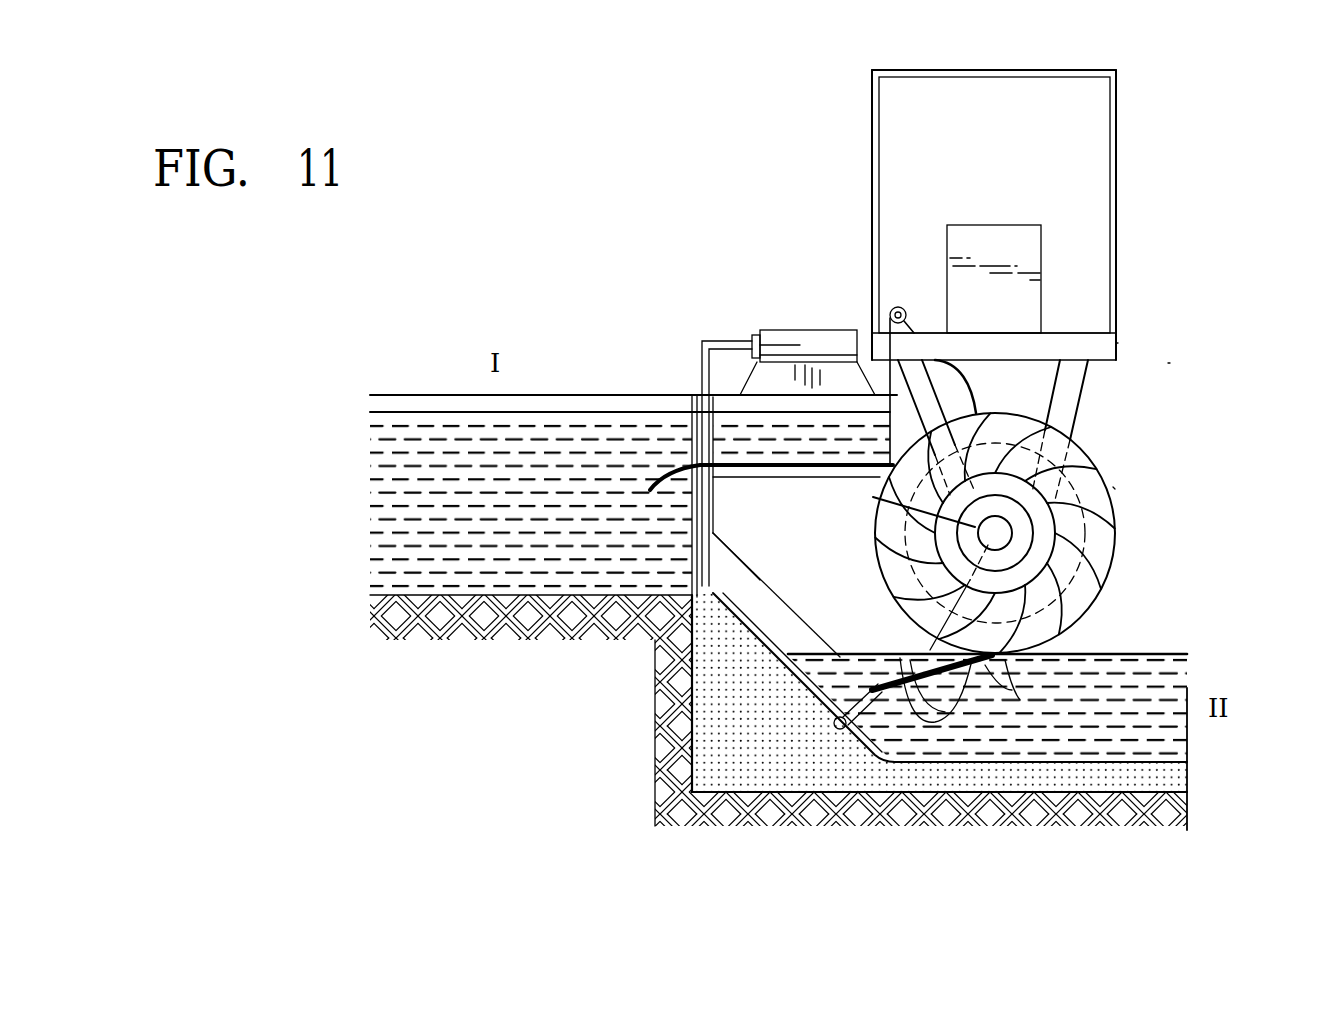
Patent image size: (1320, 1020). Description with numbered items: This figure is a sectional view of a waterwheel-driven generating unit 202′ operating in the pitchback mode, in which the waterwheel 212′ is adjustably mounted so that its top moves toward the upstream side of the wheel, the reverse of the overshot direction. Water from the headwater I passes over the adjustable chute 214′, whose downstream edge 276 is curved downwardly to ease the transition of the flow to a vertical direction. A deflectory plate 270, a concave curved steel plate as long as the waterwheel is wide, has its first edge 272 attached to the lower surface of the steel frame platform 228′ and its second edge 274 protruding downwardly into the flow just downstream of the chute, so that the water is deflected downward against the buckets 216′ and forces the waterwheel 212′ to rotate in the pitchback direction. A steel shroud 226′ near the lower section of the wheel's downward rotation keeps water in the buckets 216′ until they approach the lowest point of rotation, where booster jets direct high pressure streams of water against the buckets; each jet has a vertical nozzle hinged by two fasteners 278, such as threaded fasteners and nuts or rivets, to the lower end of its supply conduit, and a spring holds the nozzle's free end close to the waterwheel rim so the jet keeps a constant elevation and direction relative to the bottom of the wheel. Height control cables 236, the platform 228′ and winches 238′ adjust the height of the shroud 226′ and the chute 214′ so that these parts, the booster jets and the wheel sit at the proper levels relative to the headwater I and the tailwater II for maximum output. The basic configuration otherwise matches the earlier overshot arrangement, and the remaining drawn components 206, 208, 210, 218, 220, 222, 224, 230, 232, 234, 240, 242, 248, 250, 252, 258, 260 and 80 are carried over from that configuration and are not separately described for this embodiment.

The waterwheel-driven generating unit 202′ is at (1175, 361).
The ground fill 206 is at (715, 740).
The generator housing 208 is at (1138, 126).
The hydraulic cylinder 210 is at (768, 338).
The waterwheel 212′ is at (1095, 460).
The chute 214′ is at (700, 348).
The buckets 216′ is at (1108, 578).
The wheel rim 218 is at (1113, 487).
The axle 220 is at (1000, 532).
The outer rim 222 is at (1085, 425).
The gate wall 224 is at (717, 505).
The steel shroud 226′ is at (865, 513).
The steel frame platform 228′ is at (1117, 343).
The hub 230 is at (1115, 527).
The bearing support 232 is at (980, 542).
The generator 234 is at (990, 225).
The height control cables 236 is at (877, 387).
The winches 238′ is at (893, 306).
The housing side wall 240 is at (1117, 183).
The housing top 242 is at (1053, 70).
The chute inlet wall 248 is at (718, 600).
The chute channel 250 is at (760, 628).
The retaining wall 252 is at (693, 503).
The chute floor 258 is at (810, 690).
The foundation 260 is at (778, 742).
The deflectory plate 270 is at (968, 377).
The first edge of the deflectory plate 272 is at (870, 333).
The second edge of the deflectory plate 274 is at (1047, 402).
The downstream edge of the chute 276 is at (867, 480).
The fasteners 278 is at (957, 722).
The flap valve 80 is at (903, 668).